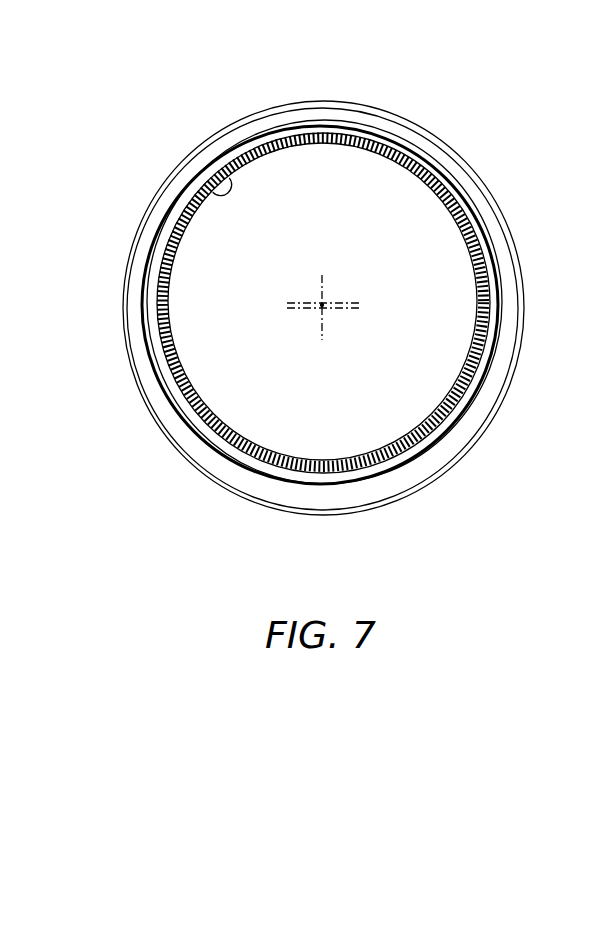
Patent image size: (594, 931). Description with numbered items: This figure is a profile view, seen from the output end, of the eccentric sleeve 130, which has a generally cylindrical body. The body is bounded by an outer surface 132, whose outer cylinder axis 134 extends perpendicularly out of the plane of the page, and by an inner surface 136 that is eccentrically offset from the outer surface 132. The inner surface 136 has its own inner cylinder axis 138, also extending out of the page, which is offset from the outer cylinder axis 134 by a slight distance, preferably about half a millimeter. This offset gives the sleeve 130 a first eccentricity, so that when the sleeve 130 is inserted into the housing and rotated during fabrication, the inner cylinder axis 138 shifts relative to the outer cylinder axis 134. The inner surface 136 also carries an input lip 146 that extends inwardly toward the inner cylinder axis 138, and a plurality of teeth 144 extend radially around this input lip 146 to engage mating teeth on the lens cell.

The eccentric sleeve 130 is at (207, 121).
The outer surface 132 is at (440, 145).
The outer cylinder axis 134 is at (322, 305).
The inner surface 136 is at (352, 125).
The inner cylinder axis 138 is at (322, 305).
The teeth 144 is at (170, 237).
The input lip 146 is at (223, 168).